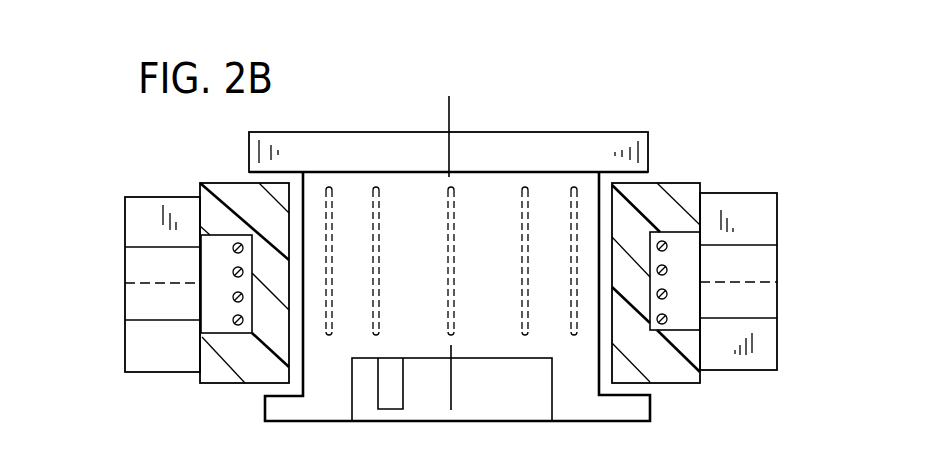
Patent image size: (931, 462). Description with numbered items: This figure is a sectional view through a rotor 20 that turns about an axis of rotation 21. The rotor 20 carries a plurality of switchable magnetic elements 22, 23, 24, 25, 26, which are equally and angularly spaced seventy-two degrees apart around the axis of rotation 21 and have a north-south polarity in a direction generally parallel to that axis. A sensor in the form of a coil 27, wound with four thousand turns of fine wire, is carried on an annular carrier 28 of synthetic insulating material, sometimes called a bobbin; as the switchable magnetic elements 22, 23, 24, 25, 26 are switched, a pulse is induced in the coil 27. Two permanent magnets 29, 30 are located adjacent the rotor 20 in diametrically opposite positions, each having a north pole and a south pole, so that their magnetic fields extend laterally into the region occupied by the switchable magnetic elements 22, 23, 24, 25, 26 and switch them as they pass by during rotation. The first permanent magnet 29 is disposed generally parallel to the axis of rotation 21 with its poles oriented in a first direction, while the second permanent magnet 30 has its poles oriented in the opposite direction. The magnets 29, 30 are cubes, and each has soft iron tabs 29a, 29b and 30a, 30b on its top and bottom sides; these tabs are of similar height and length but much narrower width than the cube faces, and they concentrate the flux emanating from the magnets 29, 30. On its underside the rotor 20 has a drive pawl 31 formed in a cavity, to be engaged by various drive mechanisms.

The rotor 20 is at (650, 405).
The axis of rotation 21 is at (449, 110).
The switchable magnetic element 22 is at (572, 253).
The switchable magnetic element 23 is at (530, 257).
The switchable magnetic element 24 is at (378, 257).
The switchable magnetic element 25 is at (333, 257).
The switchable magnetic element 26 is at (452, 258).
The coil 27 is at (665, 243).
The annular carrier 28 is at (661, 183).
The permanent magnet 29 is at (786, 255).
The soft iron tab 29a is at (777, 218).
The soft iron tab 29b is at (777, 337).
The permanent magnet 30 is at (116, 266).
The soft iron tab 30a is at (125, 220).
The soft iron tab 30b is at (125, 340).
The drive pawl 31 is at (403, 385).